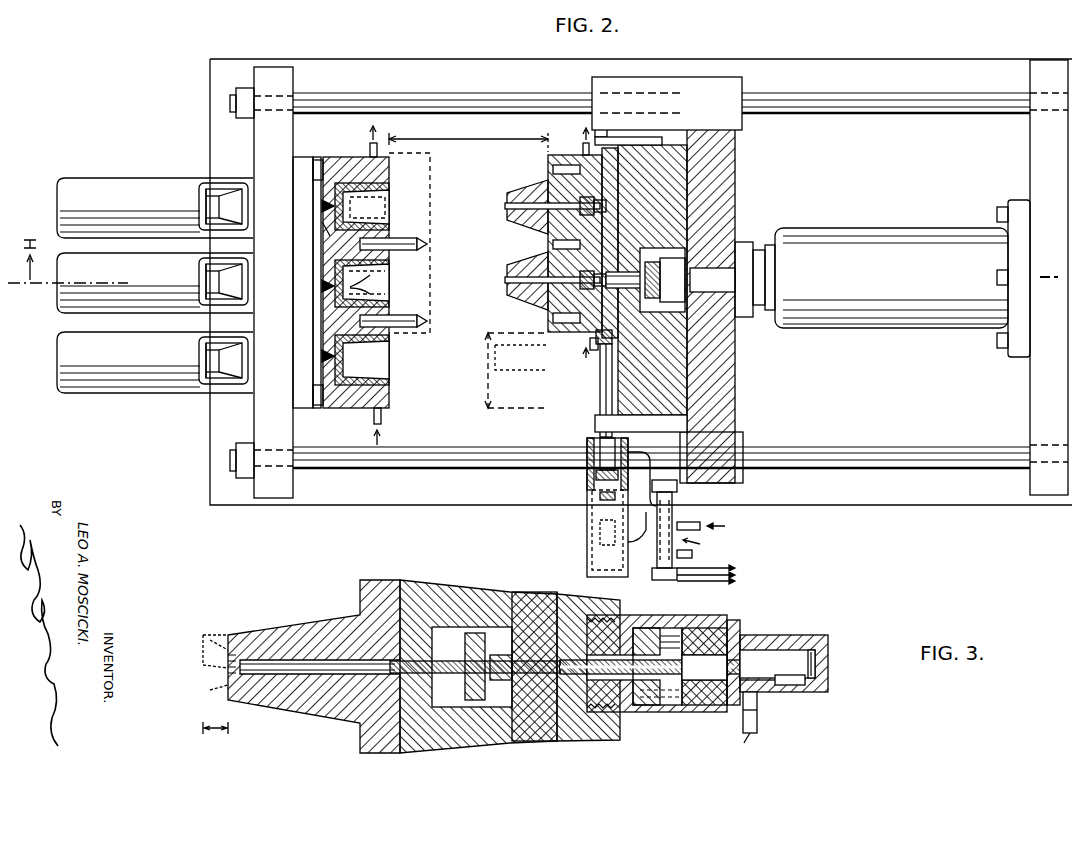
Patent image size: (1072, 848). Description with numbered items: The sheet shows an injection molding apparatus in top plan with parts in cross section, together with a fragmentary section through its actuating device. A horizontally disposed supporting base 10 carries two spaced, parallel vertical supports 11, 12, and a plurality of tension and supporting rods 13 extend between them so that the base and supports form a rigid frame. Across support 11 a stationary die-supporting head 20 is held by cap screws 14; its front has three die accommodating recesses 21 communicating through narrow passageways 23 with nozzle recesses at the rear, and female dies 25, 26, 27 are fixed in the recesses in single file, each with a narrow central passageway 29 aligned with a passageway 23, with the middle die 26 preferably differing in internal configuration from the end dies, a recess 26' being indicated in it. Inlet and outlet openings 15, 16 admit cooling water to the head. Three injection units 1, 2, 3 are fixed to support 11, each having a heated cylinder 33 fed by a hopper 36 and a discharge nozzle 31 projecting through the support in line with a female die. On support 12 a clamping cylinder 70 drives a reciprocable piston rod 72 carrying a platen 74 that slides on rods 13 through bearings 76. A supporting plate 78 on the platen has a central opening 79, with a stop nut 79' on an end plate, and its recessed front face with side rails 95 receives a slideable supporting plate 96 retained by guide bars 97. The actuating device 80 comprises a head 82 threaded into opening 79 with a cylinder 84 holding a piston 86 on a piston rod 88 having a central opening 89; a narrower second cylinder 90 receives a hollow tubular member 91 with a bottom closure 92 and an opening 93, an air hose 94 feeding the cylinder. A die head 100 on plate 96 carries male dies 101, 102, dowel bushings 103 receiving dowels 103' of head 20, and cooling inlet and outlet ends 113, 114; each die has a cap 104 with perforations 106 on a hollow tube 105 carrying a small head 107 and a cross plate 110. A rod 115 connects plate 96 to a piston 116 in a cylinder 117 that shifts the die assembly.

In FIG. 2, the injection unit 1 is at (52, 376).
In FIG. 2, the injection unit 2 is at (52, 308).
In FIG. 2, the injection unit 3 is at (52, 182).
In FIG. 2, the supporting base 10 is at (416, 62).
In FIG. 2, the vertical support 11 is at (274, 68).
In FIG. 2, the vertical support 12 is at (1050, 62).
In FIG. 2, the tension and supporting rods 13 is at (456, 98).
In FIG. 2, the cap screws 14 is at (312, 173).
In FIG. 2, the inlet opening 15 is at (382, 420).
In FIG. 2, the outlet opening 16 is at (360, 150).
In FIG. 2, the stationary die-supporting head 20 is at (324, 158).
In FIG. 2, the die accommodating recesses 21 is at (390, 170).
In FIG. 2, the passageways 23 is at (324, 257).
In FIG. 2, the female die 25 is at (386, 380).
In FIG. 2, the female die 26 is at (375, 283).
In FIG. 2, the central cavity recess 26' is at (399, 267).
In FIG. 2, the female die 27 is at (386, 214).
In FIG. 2, the central passageway 29 is at (344, 208).
In FIG. 2, the discharge nozzle 31 is at (324, 206).
In FIG. 2, the cylinder 33 is at (141, 281).
In FIG. 2, the hopper 36 is at (216, 188).
In FIG. 2, the clamping cylinder 70 is at (892, 226).
In FIG. 2, the piston rod 72 is at (756, 312).
In FIG. 2, the platen 74 is at (730, 178).
In FIG. 2, the bearings 76 is at (650, 82).
In FIG. 2, the supporting plate 78 is at (694, 168).
In FIG. 3, the supporting plate 78 is at (582, 734).
In FIG. 2, the central opening 79 is at (748, 209).
In FIG. 3, the central opening 79 is at (544, 676).
In FIG. 2, the nozzle adapter strip 79' is at (582, 205).
In FIG. 2, the actuating device 80 is at (704, 262).
In FIG. 3, the actuating device 80 is at (635, 606).
In FIG. 3, the head 82 is at (584, 612).
In FIG. 2, the cylinder 84 is at (725, 440).
In FIG. 3, the cylinder 84 is at (680, 615).
In FIG. 3, the piston 86 is at (702, 704).
In FIG. 2, the piston rod 88 is at (662, 280).
In FIG. 3, the piston rod 88 is at (658, 704).
In FIG. 3, the central opening 89 is at (562, 588).
In FIG. 2, the second cylinder 90 is at (732, 264).
In FIG. 3, the second cylinder 90 is at (810, 636).
In FIG. 3, the hollow tubular member 91 is at (768, 636).
In FIG. 3, the bottom closure 92 is at (830, 652).
In FIG. 3, the opening 93 is at (794, 696).
In FIG. 2, the air hose 94 is at (698, 310).
In FIG. 3, the air hose 94 is at (758, 716).
In FIG. 2, the side rails 95 is at (603, 376).
In FIG. 2, the slideable supporting plate 96 is at (622, 142).
In FIG. 3, the slideable supporting plate 96 is at (536, 602).
In FIG. 2, the retaining guide bars 97 is at (606, 394).
In FIG. 2, the die head 100 is at (544, 152).
In FIG. 3, the die head 100 is at (406, 580).
In FIG. 2, the male die 101 is at (506, 264).
In FIG. 3, the male die 101 is at (312, 716).
In FIG. 2, the male die 102 is at (508, 192).
In FIG. 2, the dowel bushings 103 is at (540, 242).
In FIG. 2, the dowels 103' is at (415, 273).
In FIG. 2, the cap 104 is at (506, 204).
In FIG. 3, the cap 104 is at (216, 644).
In FIG. 2, the hollow tube 105 is at (528, 222).
In FIG. 3, the hollow tube 105 is at (272, 654).
In FIG. 3, the perforations 106 is at (230, 676).
In FIG. 3, the hollow small head 107 is at (516, 594).
In FIG. 2, the cross plate 110 is at (552, 236).
In FIG. 3, the cross plate 110 is at (466, 592).
In FIG. 2, the inlet end 113 is at (580, 146).
In FIG. 2, the outlet end 114 is at (584, 351).
In FIG. 2, the rod 115 is at (600, 410).
In FIG. 2, the piston 116 is at (586, 460).
In FIG. 2, the cylinder 117 is at (588, 496).